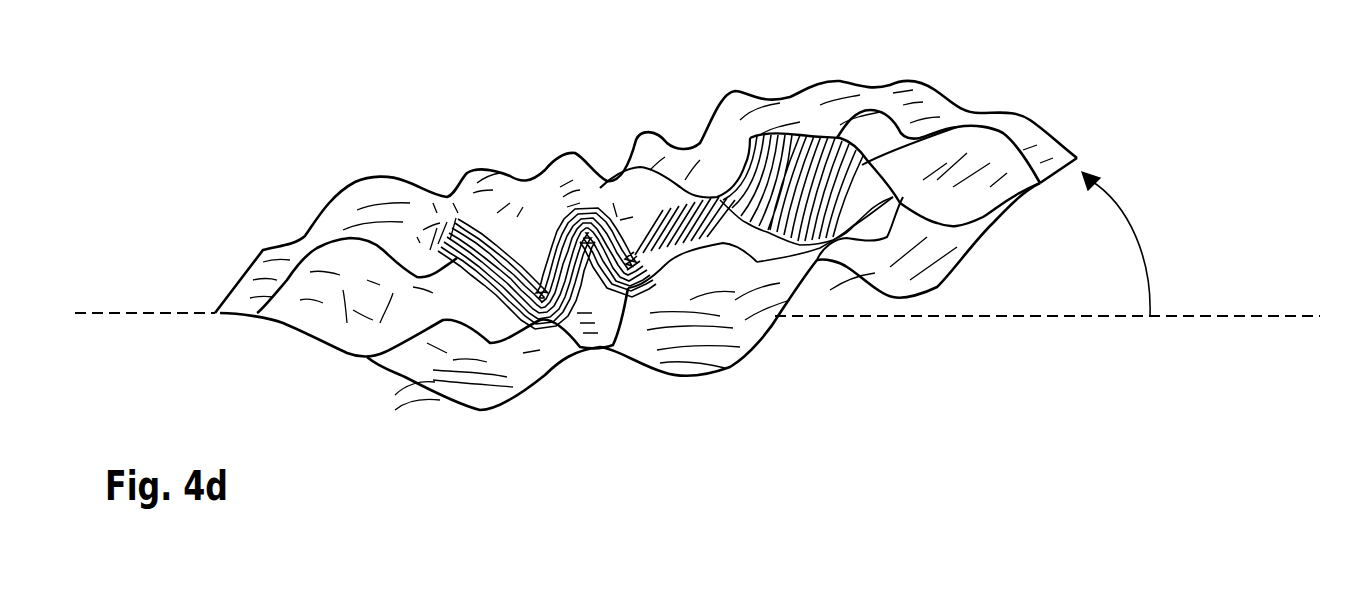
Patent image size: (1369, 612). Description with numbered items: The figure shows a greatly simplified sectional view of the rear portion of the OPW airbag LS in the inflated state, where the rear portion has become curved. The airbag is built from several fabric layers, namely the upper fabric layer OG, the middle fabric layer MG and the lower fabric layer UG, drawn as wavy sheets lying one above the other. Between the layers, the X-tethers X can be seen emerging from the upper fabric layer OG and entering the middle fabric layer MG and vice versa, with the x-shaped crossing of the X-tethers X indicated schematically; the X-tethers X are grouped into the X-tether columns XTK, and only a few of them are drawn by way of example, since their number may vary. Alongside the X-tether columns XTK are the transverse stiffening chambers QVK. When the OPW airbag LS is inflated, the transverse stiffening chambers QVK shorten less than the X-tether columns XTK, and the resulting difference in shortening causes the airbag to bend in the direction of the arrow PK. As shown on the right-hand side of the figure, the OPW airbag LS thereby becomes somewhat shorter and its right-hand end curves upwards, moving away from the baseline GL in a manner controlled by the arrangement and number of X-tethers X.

The OPW airbag LS is at (225, 203).
The middle fabric layer MG is at (280, 243).
The upper fabric layer OG is at (408, 242).
The lower fabric layer UG is at (970, 253).
The X-tethers X is at (458, 210).
The X-tether columns XTK is at (598, 225).
The transverse stiffening chambers QVK is at (413, 367).
The arrow indicating bending direction PK is at (1137, 239).
The baseline GL is at (1281, 316).